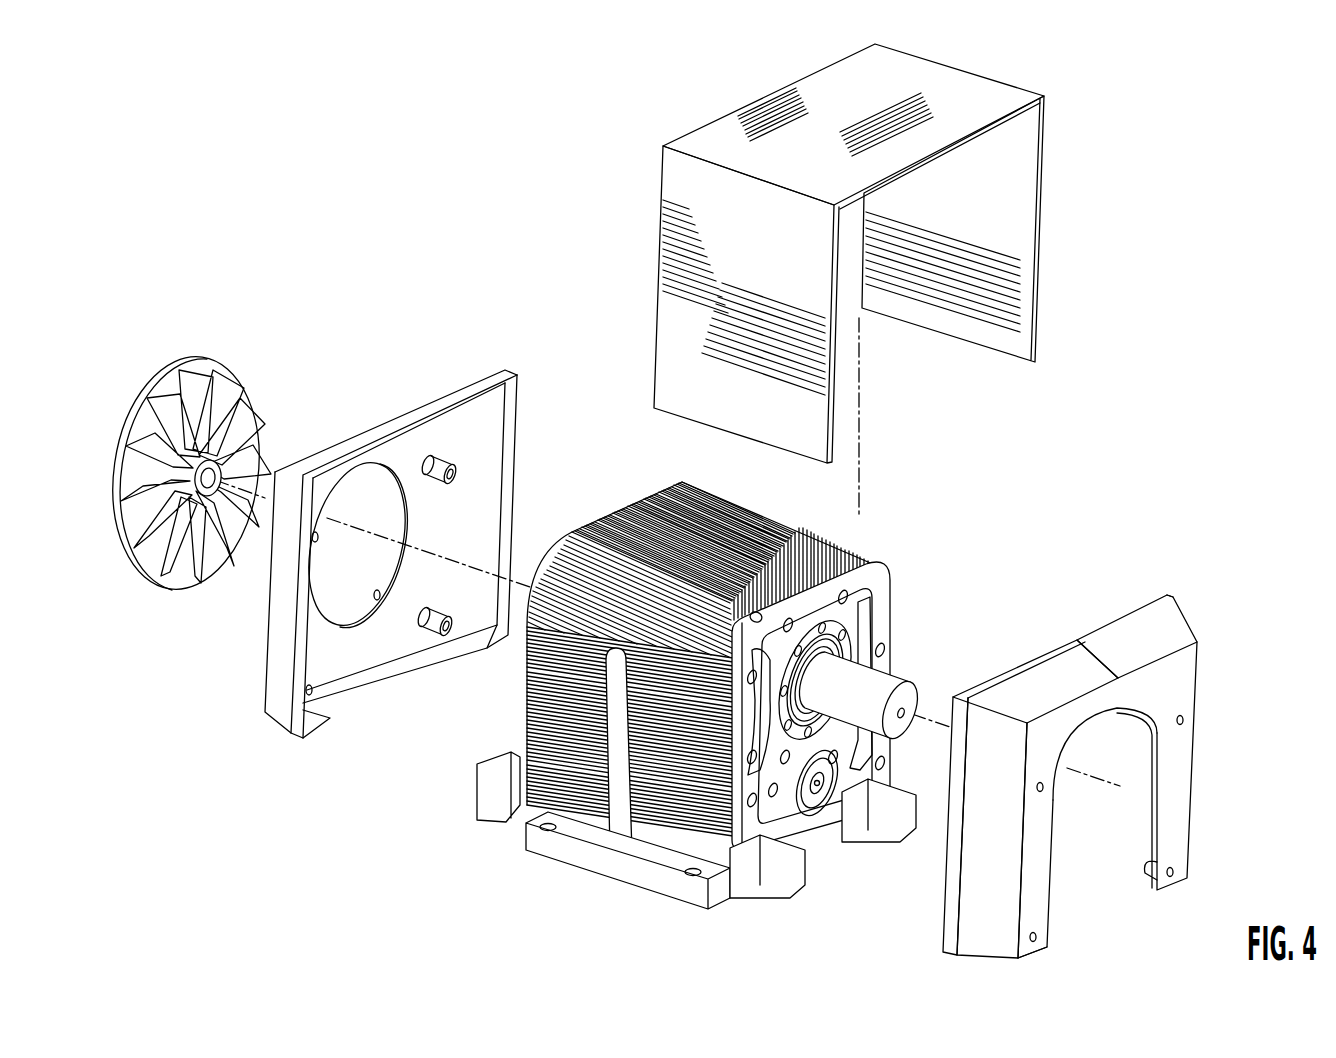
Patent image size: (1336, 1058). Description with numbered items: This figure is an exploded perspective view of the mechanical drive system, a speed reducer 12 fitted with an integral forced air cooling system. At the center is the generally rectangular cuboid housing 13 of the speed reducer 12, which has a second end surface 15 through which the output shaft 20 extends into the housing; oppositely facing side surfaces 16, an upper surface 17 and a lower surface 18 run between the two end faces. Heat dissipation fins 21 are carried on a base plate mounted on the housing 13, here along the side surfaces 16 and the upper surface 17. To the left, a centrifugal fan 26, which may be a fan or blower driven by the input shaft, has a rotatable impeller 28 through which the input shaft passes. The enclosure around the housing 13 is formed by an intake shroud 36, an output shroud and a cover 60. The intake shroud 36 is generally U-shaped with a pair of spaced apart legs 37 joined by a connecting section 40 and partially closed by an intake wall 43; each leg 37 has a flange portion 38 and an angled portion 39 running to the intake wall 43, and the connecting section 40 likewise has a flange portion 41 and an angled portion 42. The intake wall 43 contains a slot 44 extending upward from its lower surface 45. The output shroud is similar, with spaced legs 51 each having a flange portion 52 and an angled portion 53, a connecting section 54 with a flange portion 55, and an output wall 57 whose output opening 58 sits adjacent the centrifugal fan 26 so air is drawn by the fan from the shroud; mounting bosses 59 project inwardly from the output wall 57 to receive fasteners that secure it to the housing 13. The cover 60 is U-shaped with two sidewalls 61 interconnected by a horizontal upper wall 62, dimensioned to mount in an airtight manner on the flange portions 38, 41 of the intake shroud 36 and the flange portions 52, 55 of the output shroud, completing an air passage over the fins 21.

The speed reducer 12 is at (715, 703).
The housing 13 is at (719, 825).
The second end surface 15 is at (745, 835).
The side surfaces 16 is at (574, 816).
The upper surface 17 is at (835, 575).
The lower surface 18 is at (611, 884).
The output shaft 20 is at (879, 691).
The heat dissipation fins 21 is at (660, 494).
The centrifugal fan 26 is at (176, 434).
The impeller 28 is at (133, 443).
The intake shroud 36 is at (1083, 751).
The legs 37 is at (1010, 915).
The flange portion 38 is at (953, 893).
The angled portion 39 is at (990, 937).
The connecting section 40 is at (1148, 630).
The flange portion 41 is at (1113, 622).
The angled portion 42 is at (1175, 627).
The intake wall 43 is at (1180, 833).
The slot 44 is at (1055, 847).
The lower surface 45 is at (1037, 953).
The legs 51 is at (483, 485).
The flange portion 52 is at (414, 539).
The angled portion 53 is at (480, 440).
The connecting section 54 is at (372, 433).
The flange portion 55 is at (363, 447).
The output wall 57 is at (422, 443).
The output opening 58 is at (373, 603).
The mounting bosses 59 is at (437, 607).
The cover 60 is at (851, 277).
The sidewalls 61 is at (686, 205).
The upper wall 62 is at (830, 82).